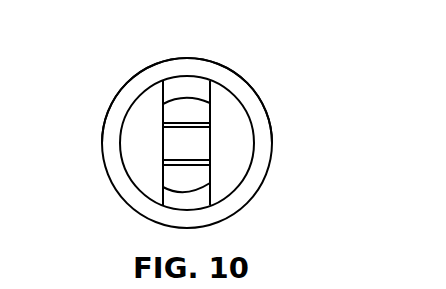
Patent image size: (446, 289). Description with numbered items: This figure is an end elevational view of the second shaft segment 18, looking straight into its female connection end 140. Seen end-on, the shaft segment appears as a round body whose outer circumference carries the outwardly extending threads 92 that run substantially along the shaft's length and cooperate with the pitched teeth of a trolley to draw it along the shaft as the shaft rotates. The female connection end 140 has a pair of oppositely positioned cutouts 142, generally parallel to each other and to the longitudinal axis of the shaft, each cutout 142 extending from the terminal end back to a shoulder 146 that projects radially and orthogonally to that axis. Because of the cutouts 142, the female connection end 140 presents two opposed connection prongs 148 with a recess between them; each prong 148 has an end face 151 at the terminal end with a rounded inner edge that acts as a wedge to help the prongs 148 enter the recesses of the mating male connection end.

The second shaft segment 18 is at (145, 34).
The female connection end 140 is at (291, 34).
The threads 92 is at (203, 59).
The connection prongs 148 is at (163, 110).
The shoulder 146 is at (143, 177).
The end face 151 is at (195, 110).
The cutouts 142 is at (233, 148).